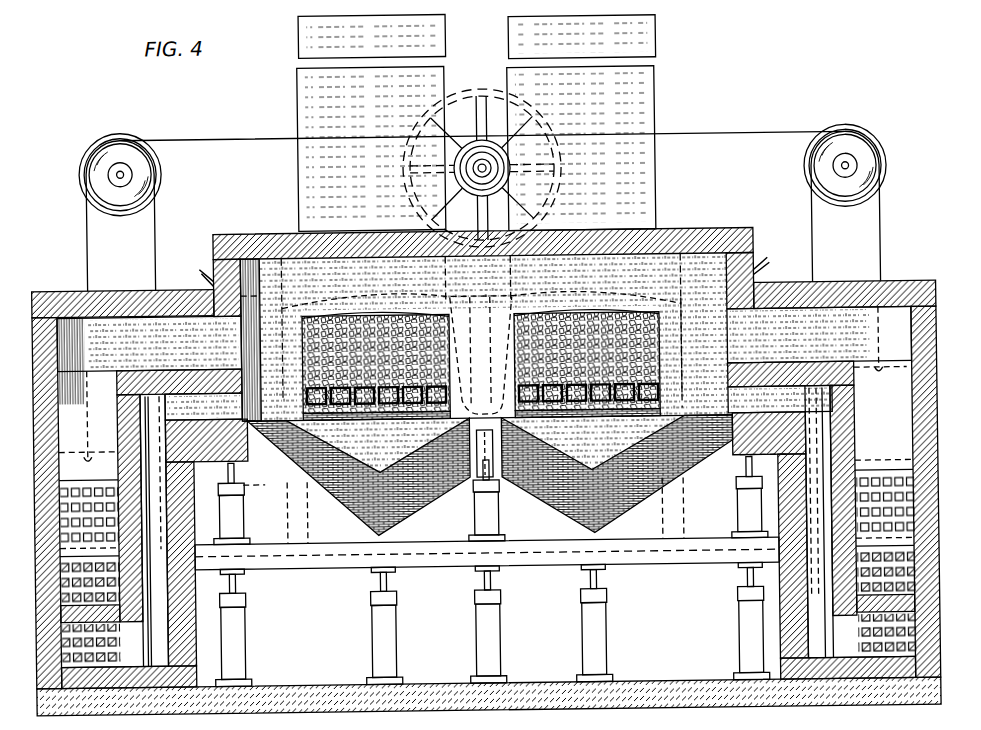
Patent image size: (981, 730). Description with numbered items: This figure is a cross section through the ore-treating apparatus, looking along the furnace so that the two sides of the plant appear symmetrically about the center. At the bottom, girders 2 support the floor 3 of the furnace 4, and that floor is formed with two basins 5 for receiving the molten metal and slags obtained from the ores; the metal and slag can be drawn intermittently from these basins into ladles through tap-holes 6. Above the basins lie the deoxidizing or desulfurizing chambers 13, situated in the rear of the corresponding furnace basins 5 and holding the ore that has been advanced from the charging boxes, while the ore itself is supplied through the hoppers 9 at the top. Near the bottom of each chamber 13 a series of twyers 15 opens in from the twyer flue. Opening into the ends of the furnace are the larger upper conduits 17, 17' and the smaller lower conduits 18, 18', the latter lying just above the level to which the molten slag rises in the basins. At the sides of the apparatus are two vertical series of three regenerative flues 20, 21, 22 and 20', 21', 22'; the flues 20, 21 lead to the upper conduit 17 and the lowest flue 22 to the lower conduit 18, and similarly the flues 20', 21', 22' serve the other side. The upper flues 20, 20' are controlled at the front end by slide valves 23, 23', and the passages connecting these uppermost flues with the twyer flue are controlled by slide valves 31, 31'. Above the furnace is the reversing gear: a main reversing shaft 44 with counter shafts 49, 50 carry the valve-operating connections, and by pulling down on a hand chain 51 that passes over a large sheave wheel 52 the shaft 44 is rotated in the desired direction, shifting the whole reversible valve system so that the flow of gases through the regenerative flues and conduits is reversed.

The girders 2 is at (487, 553).
The floor 3 is at (402, 528).
The furnace 4 is at (694, 356).
The basins 5 is at (485, 444).
The tap-holes 6 is at (243, 628).
The hoppers 9 is at (514, 34).
The deoxidizing or desulfurizing chambers 13 is at (481, 355).
The twyers 15 is at (304, 390).
The upper conduit 17 is at (819, 334).
The upper conduit 17' is at (149, 360).
The lower conduit 18 is at (780, 398).
The lower conduit 18' is at (203, 406).
The regenerative flue 20 is at (908, 498).
The regenerative flue 20' is at (62, 514).
The regenerative flue 21 is at (909, 578).
The regenerative flue 21' is at (62, 589).
The regenerative flue 22 is at (885, 635).
The regenerative flue 22' is at (88, 645).
The slide valve 23 is at (880, 338).
The slide valve 23' is at (88, 416).
The slide valve 31 is at (841, 521).
The slide valve 31' is at (131, 530).
The main reversing shaft 44 is at (479, 182).
The counter shaft 49 is at (849, 172).
The counter shaft 50 is at (124, 175).
The hand chain 51 is at (428, 274).
The sheave wheel 52 is at (495, 93).